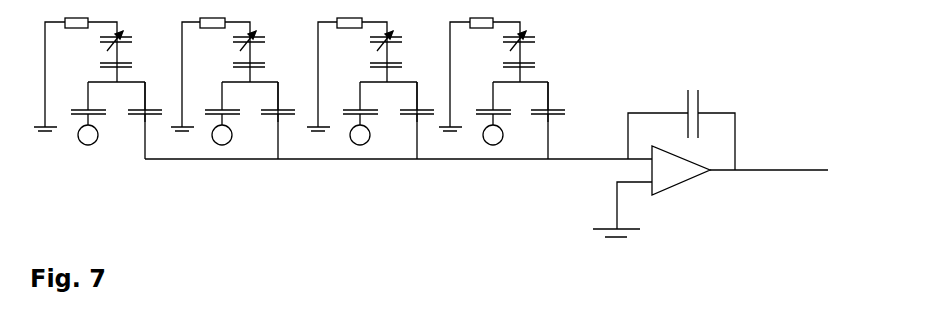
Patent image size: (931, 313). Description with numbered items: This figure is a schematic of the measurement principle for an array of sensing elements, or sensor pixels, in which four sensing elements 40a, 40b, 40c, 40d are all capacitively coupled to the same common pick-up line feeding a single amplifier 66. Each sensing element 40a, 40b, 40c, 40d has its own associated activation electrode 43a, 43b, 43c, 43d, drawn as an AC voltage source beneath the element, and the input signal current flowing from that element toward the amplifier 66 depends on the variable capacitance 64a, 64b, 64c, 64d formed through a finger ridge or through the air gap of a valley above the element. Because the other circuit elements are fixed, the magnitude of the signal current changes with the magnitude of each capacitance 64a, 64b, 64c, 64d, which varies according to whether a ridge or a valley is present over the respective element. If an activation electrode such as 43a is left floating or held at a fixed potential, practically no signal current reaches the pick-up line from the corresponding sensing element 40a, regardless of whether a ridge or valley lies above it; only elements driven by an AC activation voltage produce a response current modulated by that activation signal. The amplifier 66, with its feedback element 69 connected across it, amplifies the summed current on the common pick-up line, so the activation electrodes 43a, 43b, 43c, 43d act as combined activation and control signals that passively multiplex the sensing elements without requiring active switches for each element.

The capacitance 64a is at (135, 43).
The capacitance 64b is at (269, 43).
The capacitance 64c is at (405, 43).
The capacitance 64d is at (539, 43).
The sensing element 40a is at (116, 103).
The sensing element 40b is at (250, 103).
The sensing element 40c is at (388, 103).
The sensing element 40d is at (520, 103).
The activation electrode 43a is at (105, 140).
The activation electrode 43b is at (240, 140).
The activation electrode 43c is at (377, 140).
The activation electrode 43d is at (511, 140).
The feedback capacitor 69 is at (681, 125).
The amplifier 66 is at (710, 191).